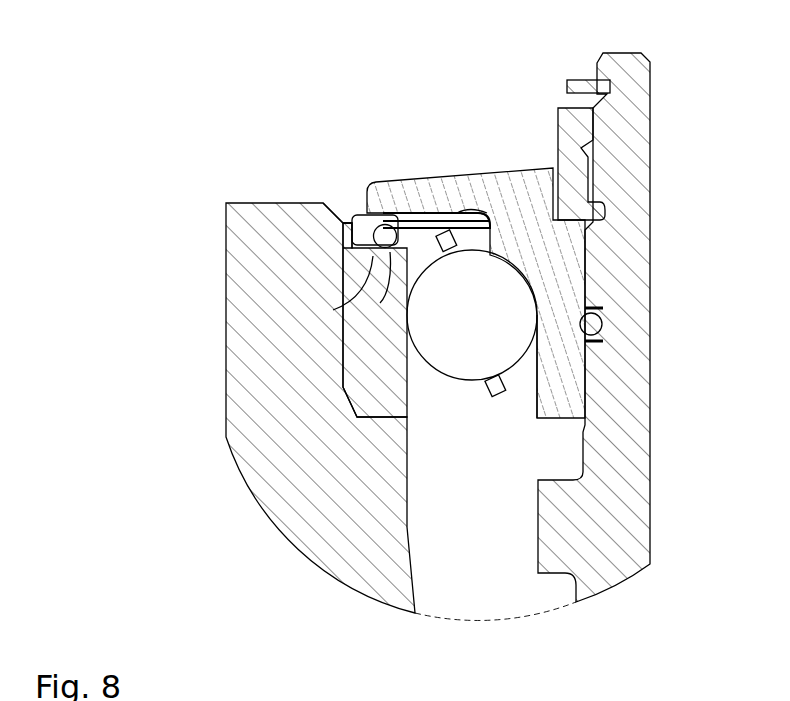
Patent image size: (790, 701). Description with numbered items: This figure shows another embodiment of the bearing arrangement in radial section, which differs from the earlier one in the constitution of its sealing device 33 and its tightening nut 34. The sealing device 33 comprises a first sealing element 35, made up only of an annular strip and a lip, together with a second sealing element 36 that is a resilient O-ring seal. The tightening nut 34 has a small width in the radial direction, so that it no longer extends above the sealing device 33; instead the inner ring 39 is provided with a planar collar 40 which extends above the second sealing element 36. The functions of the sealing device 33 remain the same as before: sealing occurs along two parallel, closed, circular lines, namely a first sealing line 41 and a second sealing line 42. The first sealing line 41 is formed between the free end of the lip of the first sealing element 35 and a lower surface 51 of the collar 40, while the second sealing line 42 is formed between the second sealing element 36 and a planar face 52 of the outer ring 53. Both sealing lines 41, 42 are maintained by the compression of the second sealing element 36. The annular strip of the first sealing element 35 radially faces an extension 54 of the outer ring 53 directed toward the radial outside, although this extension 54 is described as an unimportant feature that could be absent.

The sealing device 33 is at (417, 238).
The tightening nut 34 is at (575, 134).
The first sealing element 35 is at (362, 217).
The second sealing element 36 is at (378, 222).
The inner ring 39 is at (563, 378).
The planar collar 40 is at (458, 173).
The first sealing line 41 is at (383, 226).
The second sealing line 42 is at (375, 292).
The lower surface 51 is at (470, 216).
The planar face 52 is at (374, 305).
The outer ring 53 is at (360, 270).
The extension 54 is at (348, 224).